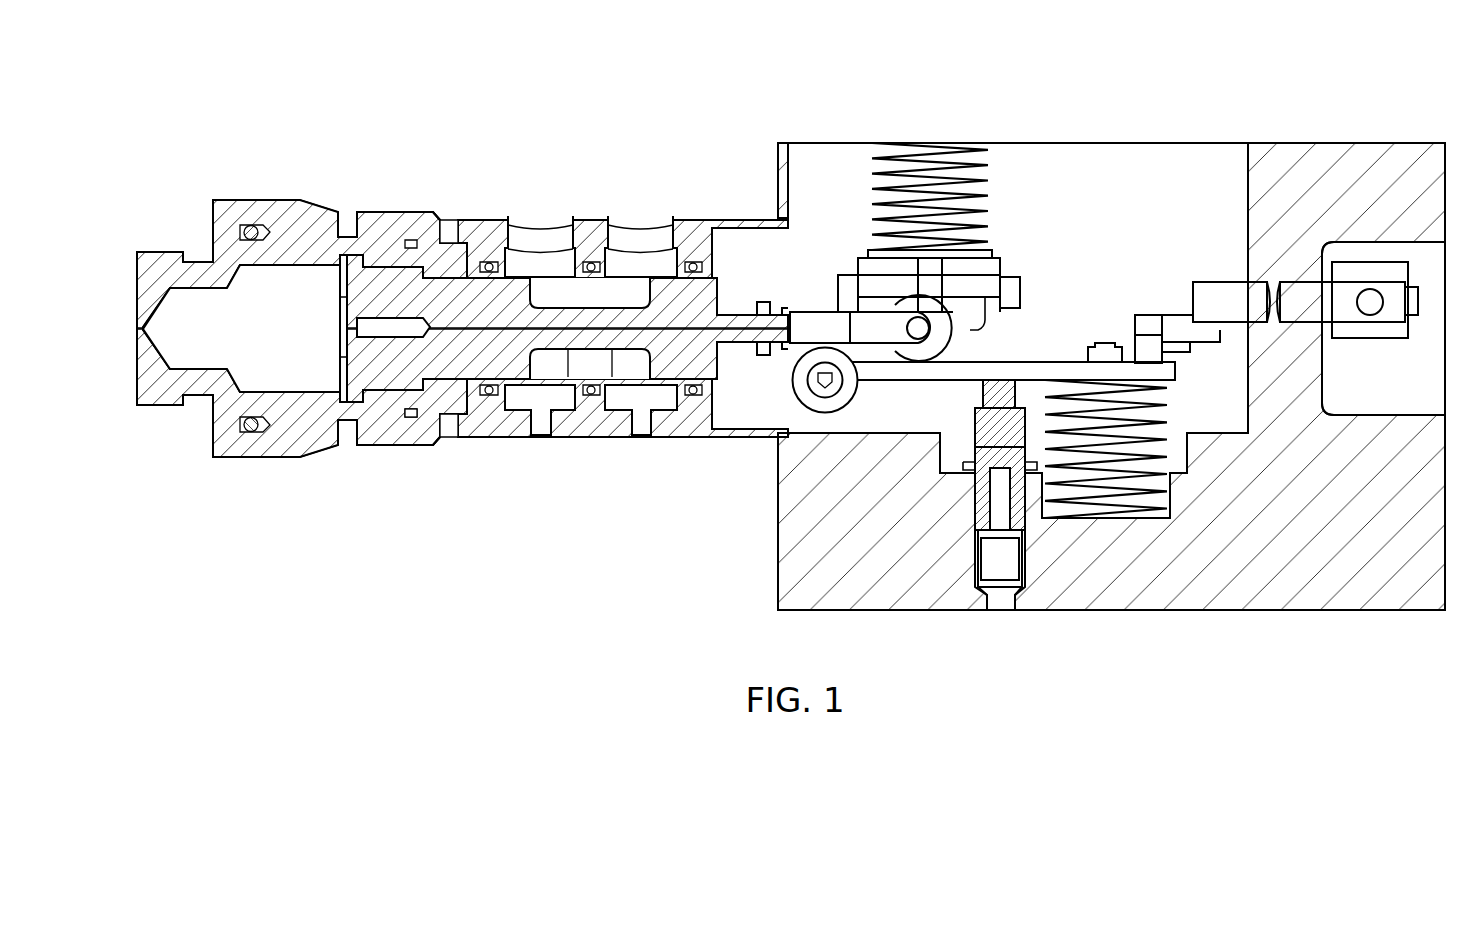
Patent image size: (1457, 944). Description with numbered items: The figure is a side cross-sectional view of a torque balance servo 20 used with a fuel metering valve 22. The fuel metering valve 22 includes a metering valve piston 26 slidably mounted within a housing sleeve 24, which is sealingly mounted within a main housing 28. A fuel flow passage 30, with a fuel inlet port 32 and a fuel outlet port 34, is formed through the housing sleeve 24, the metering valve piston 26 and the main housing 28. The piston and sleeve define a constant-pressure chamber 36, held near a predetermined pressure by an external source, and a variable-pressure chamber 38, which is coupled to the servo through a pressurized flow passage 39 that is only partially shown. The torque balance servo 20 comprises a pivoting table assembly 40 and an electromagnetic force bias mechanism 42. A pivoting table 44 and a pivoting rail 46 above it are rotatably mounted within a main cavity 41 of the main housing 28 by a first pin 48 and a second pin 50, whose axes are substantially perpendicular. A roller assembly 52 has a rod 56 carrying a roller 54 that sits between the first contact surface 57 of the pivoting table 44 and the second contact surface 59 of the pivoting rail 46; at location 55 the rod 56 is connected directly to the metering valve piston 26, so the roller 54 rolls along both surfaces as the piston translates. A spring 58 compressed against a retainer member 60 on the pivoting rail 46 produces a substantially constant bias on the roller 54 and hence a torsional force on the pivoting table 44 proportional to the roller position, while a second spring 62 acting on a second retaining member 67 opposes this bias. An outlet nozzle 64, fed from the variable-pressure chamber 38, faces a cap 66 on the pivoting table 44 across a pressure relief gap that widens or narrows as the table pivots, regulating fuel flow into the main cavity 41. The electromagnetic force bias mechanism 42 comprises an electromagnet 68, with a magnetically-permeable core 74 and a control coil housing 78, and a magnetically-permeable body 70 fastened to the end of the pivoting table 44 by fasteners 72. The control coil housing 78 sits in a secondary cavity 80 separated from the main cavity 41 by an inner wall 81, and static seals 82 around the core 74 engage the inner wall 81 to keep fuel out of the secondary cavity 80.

The torque balance servo 20 is at (757, 55).
The fuel metering valve 22 is at (493, 175).
The housing sleeve 24 is at (375, 245).
The metering valve piston 26 is at (488, 342).
The main housing 28 is at (275, 448).
The fuel flow passage 30 is at (573, 374).
The fuel inlet port 32 is at (643, 235).
The fuel outlet port 34 is at (540, 235).
The constant-pressure chamber 36 is at (445, 395).
The variable-pressure chamber 38 is at (272, 342).
The pressurized flow passage 39 is at (1000, 612).
The pivoting table assembly 40 is at (1130, 205).
The main cavity 41 is at (1213, 174).
The electromagnetic force bias mechanism 42 is at (1193, 205).
The pivoting table 44 is at (883, 372).
The pivoting rail 46 is at (1000, 270).
The first pin 48 is at (805, 380).
The second pin 50 is at (1022, 296).
The roller assembly 52 is at (810, 240).
The roller 54 is at (932, 350).
The direct connection of rod to piston 55 is at (790, 320).
The rod 56 is at (868, 341).
The first contact surface 57 is at (1045, 362).
The spring 58 is at (878, 190).
The second contact surface 59 is at (972, 326).
The retainer member 60 is at (990, 253).
The second spring 62 is at (1122, 518).
The outlet nozzle 64 is at (975, 505).
The cap 66 is at (978, 439).
The second retaining member 67 is at (1108, 350).
The electromagnet 68 is at (1275, 365).
The magnetically-permeable body 70 is at (1190, 345).
The fasteners 72 is at (1148, 335).
The magnetically-permeable core 74 is at (1393, 312).
The control coil housing 78 is at (1343, 270).
The secondary cavity 80 is at (1395, 248).
The inner wall 81 is at (1272, 439).
The static seals 82 is at (1273, 290).